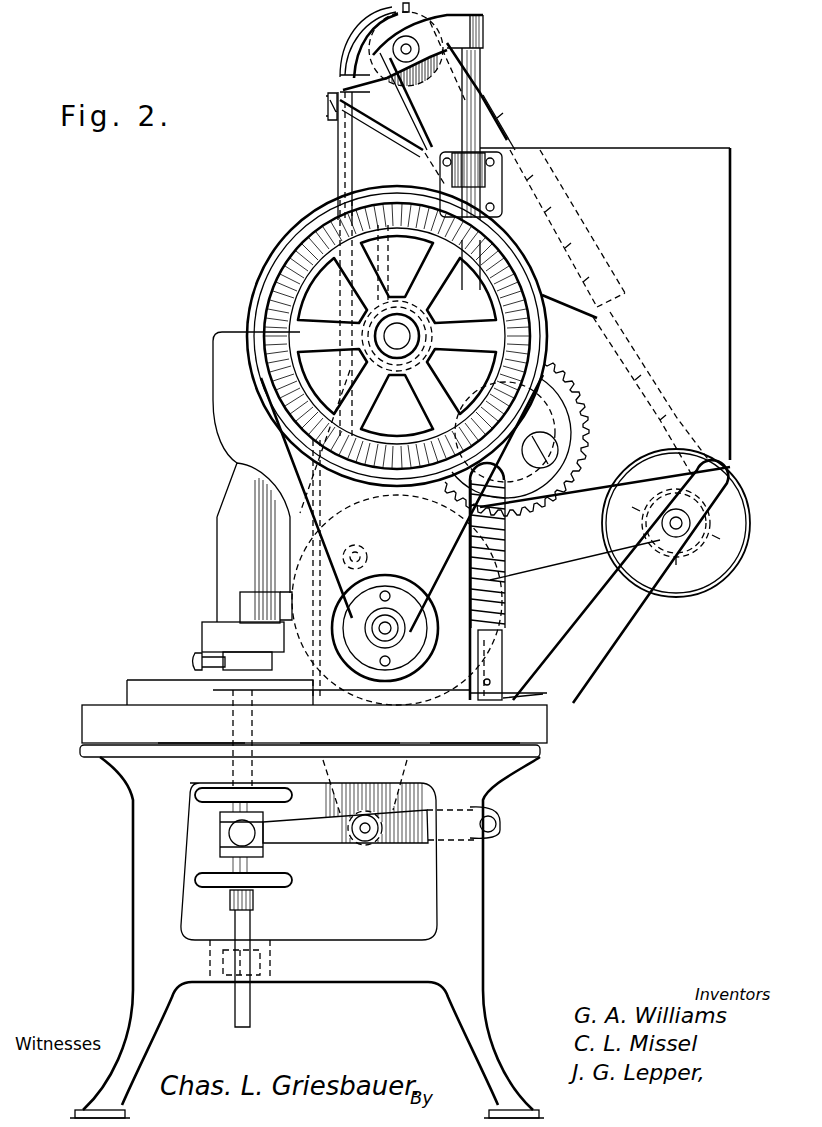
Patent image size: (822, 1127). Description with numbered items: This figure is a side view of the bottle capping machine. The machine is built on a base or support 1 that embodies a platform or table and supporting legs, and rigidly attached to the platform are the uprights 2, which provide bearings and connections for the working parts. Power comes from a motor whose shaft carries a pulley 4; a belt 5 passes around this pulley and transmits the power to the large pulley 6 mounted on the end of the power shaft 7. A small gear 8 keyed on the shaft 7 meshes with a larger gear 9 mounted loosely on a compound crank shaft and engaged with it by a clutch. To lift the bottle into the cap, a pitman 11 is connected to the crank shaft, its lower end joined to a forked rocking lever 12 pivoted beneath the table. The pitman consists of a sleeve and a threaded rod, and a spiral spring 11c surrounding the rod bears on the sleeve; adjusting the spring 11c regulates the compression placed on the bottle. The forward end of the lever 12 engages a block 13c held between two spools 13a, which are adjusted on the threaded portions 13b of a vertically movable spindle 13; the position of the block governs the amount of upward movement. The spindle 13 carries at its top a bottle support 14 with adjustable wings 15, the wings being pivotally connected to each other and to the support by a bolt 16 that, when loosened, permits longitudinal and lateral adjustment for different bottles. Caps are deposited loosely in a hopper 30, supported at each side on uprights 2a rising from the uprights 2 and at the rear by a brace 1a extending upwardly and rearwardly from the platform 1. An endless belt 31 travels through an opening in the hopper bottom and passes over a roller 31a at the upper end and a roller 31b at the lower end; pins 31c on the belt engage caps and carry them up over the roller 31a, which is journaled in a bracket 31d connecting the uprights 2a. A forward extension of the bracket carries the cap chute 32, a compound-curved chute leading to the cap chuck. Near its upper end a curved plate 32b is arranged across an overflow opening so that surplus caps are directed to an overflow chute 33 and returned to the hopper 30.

The base or support 1 is at (308, 899).
The brace 1a is at (615, 581).
The uprights 2 is at (300, 450).
The uprights 2a is at (482, 100).
The pulley 4 is at (506, 620).
The belt 5 is at (320, 532).
The large pulley 6 is at (322, 218).
The power shaft 7 is at (372, 338).
The small gear 8 is at (385, 318).
The larger gear 9 is at (556, 402).
The pitman 11 is at (490, 690).
The spiral spring 11c is at (492, 566).
The forked rocking lever 12 is at (404, 846).
The spindle 13 is at (246, 930).
The spools 13a is at (328, 876).
The threaded portions 13b is at (221, 909).
The block 13c is at (228, 838).
The bottle support 14 is at (210, 640).
The adjustable wings 15 is at (250, 603).
The bolt 16 is at (235, 515).
The hopper 30 is at (605, 304).
The endless belt 31 is at (503, 128).
The roller 31a is at (420, 68).
The roller 31b is at (700, 545).
The pins 31c is at (484, 86).
The bracket 31d is at (485, 28).
The cap chute 32 is at (346, 45).
The curved plate 32b is at (332, 98).
The overflow chute 33 is at (380, 136).